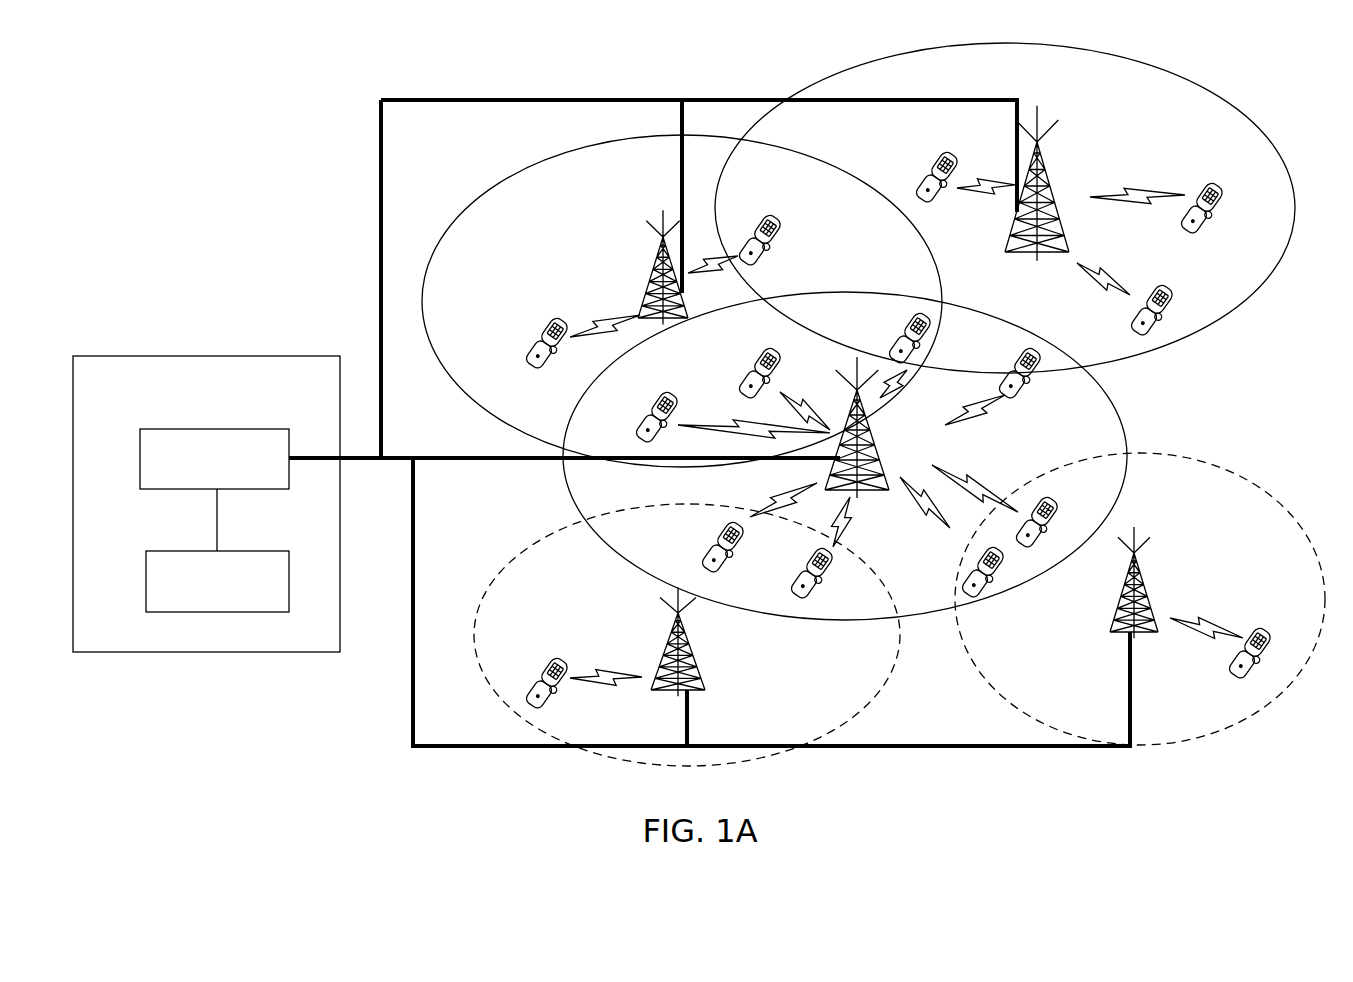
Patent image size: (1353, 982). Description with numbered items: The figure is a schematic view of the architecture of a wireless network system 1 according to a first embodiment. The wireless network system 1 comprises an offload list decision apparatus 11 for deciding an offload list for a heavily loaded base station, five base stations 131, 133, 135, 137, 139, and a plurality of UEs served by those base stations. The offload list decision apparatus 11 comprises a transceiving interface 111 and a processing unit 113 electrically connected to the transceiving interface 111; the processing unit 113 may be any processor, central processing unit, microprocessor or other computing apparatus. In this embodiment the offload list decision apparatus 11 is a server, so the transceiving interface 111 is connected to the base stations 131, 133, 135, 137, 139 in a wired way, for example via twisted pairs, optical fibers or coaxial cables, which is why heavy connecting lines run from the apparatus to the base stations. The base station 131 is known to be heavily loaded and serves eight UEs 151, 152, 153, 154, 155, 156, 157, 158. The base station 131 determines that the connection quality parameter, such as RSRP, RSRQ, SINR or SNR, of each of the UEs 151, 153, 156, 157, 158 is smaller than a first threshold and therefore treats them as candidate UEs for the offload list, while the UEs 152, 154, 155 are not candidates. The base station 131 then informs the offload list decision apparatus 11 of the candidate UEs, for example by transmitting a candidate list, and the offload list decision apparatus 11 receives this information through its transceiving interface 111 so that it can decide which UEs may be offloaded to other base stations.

The wireless network system 1 is at (281, 66).
The offload list decision apparatus 11 is at (199, 356).
The transceiving interface 111 is at (140, 480).
The processing unit 113 is at (146, 603).
The base station 131 is at (882, 453).
The base station 133 is at (642, 290).
The base station 135 is at (1058, 190).
The base station 137 is at (1158, 603).
The base station 139 is at (663, 662).
The UE 151 is at (740, 380).
The UE 152 is at (636, 421).
The UE 153 is at (710, 553).
The UE 154 is at (797, 573).
The UE 155 is at (960, 582).
The UE 156 is at (1060, 515).
The UE 157 is at (998, 378).
The UE 158 is at (890, 345).